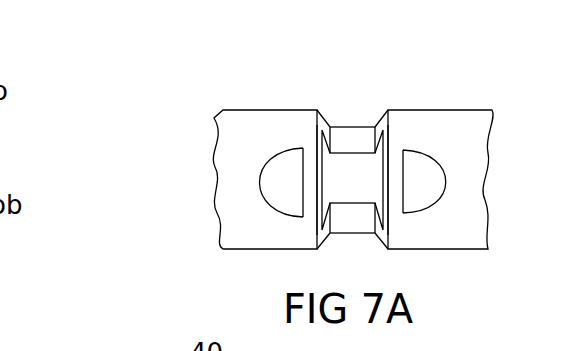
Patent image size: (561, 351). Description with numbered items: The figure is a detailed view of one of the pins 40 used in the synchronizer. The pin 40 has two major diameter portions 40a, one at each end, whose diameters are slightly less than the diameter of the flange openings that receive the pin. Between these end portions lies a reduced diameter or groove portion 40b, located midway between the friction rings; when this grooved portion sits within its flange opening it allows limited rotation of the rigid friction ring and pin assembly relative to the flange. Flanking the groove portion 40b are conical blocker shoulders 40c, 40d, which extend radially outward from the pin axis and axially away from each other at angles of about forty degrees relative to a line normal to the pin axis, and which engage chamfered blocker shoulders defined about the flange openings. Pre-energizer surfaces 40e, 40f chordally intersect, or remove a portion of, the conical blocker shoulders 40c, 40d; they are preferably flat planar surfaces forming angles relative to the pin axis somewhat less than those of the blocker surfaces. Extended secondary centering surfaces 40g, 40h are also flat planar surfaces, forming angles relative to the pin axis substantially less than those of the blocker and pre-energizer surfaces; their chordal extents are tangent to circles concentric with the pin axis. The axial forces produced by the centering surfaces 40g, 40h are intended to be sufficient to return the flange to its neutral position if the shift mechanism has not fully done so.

The pin 40 is at (198, 217).
The major diameter portions 40a is at (248, 110).
The reduced diameter or groove portion 40b is at (354, 127).
The conical blocker shoulder 40c is at (323, 128).
The conical blocker shoulder 40d is at (383, 128).
The pre-energizer surface 40e is at (317, 222).
The pre-energizer surface 40f is at (397, 214).
The secondary centering surface 40g is at (270, 179).
The secondary centering surface 40h is at (423, 165).